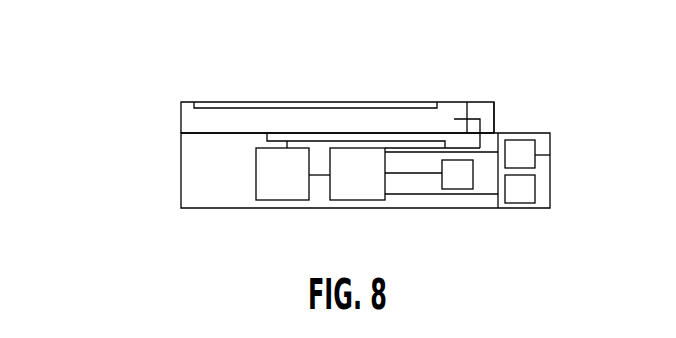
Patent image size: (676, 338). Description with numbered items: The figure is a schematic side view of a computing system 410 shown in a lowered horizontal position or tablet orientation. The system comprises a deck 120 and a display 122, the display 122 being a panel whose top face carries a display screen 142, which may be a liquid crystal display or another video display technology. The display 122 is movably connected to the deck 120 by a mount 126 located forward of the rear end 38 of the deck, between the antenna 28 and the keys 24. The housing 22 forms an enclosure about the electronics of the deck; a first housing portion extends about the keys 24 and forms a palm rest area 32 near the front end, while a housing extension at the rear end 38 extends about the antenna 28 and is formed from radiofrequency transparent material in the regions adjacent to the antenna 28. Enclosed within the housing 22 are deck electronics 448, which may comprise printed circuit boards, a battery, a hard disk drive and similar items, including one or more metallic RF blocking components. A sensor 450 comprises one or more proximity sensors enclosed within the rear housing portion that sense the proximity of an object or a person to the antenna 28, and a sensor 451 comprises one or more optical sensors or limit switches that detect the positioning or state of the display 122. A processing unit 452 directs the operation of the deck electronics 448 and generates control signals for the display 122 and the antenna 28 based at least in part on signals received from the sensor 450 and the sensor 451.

The computing system 410 is at (95, 73).
The rear end 38 is at (577, 117).
The housing 22 is at (181, 158).
The deck 120 is at (181, 142).
The display 122 is at (181, 117).
The display screen 142 is at (372, 102).
The mount 126 is at (494, 119).
The palm rest area 32 is at (217, 133).
The keys 24 is at (267, 137).
The deck electronics 448 is at (277, 200).
The processing unit 452 is at (368, 200).
The sensor 451 is at (452, 189).
The sensor 450 is at (520, 208).
The antenna 28 is at (550, 155).